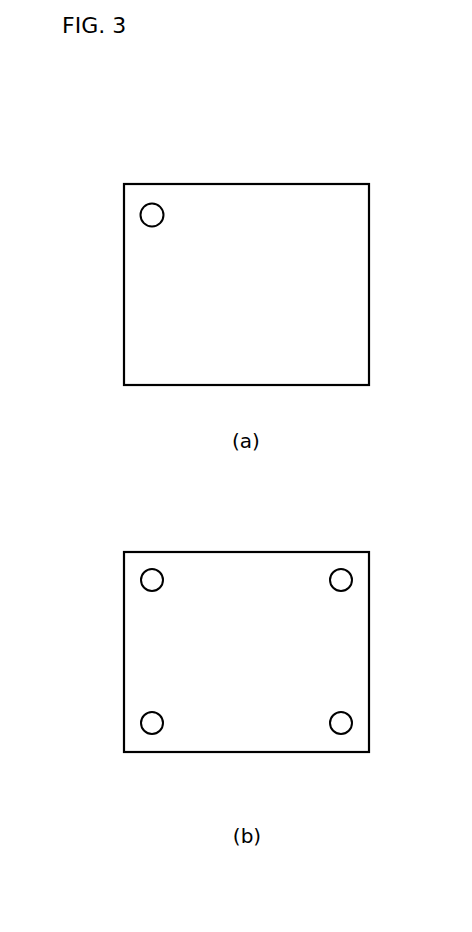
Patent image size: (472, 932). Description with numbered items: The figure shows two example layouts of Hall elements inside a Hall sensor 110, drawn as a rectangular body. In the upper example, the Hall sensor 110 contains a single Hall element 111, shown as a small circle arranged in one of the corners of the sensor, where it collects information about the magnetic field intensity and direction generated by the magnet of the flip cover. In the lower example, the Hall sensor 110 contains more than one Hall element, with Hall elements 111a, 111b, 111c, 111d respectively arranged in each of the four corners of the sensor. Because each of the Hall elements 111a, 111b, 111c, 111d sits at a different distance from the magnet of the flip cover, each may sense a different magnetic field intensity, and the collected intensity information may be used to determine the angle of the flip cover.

The Hall sensor 110 is at (267, 128).
The Hall element 111 is at (140, 216).
The Hall element 111a is at (155, 569).
The Hall element 111b is at (344, 569).
The Hall element 111c is at (343, 734).
The Hall element 111d is at (154, 734).